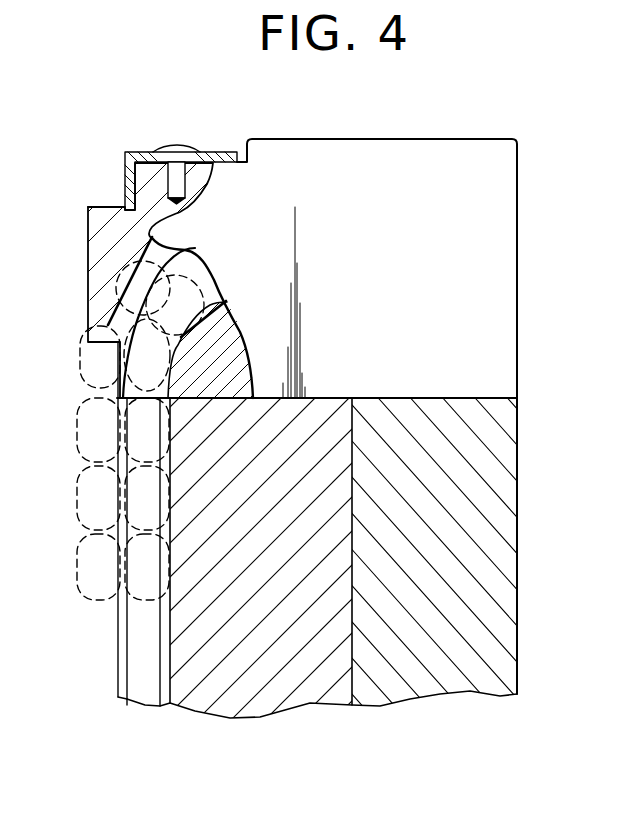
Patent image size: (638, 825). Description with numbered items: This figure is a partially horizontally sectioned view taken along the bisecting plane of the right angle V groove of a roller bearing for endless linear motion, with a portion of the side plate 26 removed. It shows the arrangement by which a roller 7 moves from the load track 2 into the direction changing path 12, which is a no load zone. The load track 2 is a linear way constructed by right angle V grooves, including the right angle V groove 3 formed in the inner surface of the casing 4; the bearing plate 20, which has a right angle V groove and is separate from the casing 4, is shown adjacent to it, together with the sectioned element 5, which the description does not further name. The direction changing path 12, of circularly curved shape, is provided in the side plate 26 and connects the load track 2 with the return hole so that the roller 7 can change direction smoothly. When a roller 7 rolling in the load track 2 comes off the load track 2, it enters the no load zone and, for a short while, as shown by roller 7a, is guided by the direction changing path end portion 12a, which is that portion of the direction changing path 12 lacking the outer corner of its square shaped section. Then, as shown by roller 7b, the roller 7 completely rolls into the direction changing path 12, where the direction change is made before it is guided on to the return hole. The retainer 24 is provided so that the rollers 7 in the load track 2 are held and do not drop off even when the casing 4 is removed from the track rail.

The load track 2 is at (133, 677).
The right angle V groove 3 is at (145, 693).
The casing 4 is at (350, 578).
The support block section 5 is at (495, 568).
The roller 7 is at (82, 585).
The roller 7a is at (80, 359).
The roller 7b is at (116, 261).
The direction changing path 12 is at (110, 308).
The direction changing path end portion 12a is at (112, 371).
The bearing plate 20 is at (304, 692).
The retainer 24 is at (124, 166).
The side plate 26 is at (476, 156).